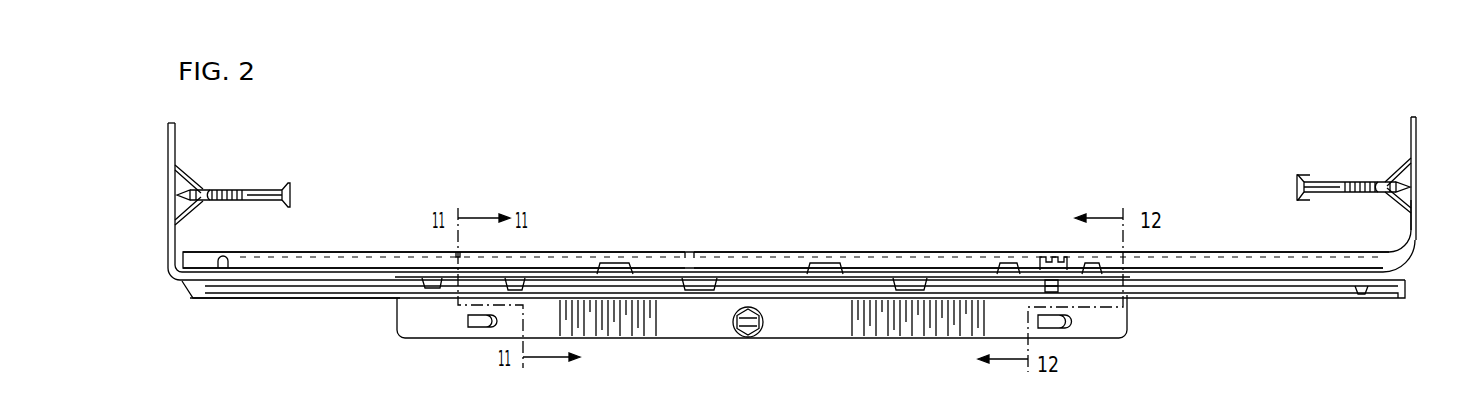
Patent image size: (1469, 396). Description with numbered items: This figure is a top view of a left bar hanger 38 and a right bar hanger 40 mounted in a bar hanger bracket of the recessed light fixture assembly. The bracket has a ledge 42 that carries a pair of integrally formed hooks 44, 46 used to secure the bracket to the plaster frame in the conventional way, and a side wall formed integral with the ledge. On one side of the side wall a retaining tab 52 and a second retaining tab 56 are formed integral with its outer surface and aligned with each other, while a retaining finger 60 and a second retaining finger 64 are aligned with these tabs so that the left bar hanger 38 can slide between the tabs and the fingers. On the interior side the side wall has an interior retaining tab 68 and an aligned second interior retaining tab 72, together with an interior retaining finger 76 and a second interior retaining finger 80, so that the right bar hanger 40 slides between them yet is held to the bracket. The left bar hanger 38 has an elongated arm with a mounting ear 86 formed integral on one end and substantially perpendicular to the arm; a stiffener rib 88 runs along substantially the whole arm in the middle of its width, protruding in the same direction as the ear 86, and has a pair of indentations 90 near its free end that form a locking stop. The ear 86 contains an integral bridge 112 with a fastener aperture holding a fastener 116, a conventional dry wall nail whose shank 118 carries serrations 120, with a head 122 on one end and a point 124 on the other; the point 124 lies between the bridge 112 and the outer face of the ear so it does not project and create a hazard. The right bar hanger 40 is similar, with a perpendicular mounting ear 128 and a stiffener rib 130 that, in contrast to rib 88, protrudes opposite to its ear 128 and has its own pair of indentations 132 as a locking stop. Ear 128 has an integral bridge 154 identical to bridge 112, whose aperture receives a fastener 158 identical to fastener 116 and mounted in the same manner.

The left bar hanger 38 is at (1227, 248).
The right bar hanger 40 is at (256, 302).
The ledge 42 is at (917, 327).
The hook 44 is at (477, 323).
The hook 46 is at (1053, 323).
The retaining tab 52 is at (823, 263).
The second retaining tab 56 is at (612, 264).
The retaining finger 60 is at (1087, 262).
The second retaining finger 64 is at (1003, 262).
The interior retaining tab 68 is at (700, 289).
The second interior retaining tab 72 is at (898, 284).
The interior retaining finger 76 is at (430, 283).
The second interior retaining finger 80 is at (515, 289).
The mounting ear 86 is at (1416, 140).
The stiffener rib 88 is at (362, 256).
The indentations 90 is at (228, 258).
The bridge 112 is at (1398, 163).
The fastener 116 is at (1307, 171).
The shank 118 is at (262, 192).
The serrations 120 is at (223, 187).
The head 122 is at (1297, 188).
The point 124 is at (1418, 213).
The mounting ear 128 is at (177, 138).
The stiffener rib 130 is at (343, 299).
The indentations 132 is at (1362, 297).
The bridge 154 is at (185, 168).
The fastener 158 is at (304, 189).